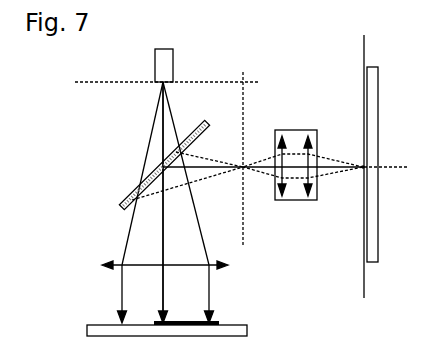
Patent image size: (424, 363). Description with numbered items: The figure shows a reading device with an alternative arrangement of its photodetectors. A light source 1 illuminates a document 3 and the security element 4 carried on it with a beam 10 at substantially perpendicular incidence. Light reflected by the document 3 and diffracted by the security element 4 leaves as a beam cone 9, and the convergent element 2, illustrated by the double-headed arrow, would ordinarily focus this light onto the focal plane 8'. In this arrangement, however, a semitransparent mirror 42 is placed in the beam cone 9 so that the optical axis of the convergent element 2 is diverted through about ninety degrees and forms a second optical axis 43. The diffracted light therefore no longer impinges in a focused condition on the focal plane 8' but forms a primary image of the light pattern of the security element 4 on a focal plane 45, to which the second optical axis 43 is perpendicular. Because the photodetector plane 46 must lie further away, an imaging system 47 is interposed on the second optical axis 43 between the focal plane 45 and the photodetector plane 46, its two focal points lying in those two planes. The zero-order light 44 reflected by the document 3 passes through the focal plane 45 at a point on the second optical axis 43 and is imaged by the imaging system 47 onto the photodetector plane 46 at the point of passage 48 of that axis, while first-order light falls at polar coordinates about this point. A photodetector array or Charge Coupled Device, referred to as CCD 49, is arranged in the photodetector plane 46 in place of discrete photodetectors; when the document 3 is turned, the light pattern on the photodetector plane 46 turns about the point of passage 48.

The light source 1 is at (155, 78).
The convergent element 2 is at (228, 265).
The document 3 is at (247, 328).
The security element 4 is at (219, 321).
The focal plane 8' is at (162, 65).
The beam cone 9 is at (146, 153).
The beam 10 is at (121, 299).
The semitransparent mirror 42 is at (207, 122).
The second optical axis 43 is at (387, 168).
The light diffracted into the zero diffraction order 44 is at (200, 167).
The focal plane 45 is at (243, 244).
The photodetector plane 46 is at (364, 60).
The imaging system 47 is at (288, 201).
The point of passage 48 is at (360, 171).
The CCD 49 is at (378, 105).